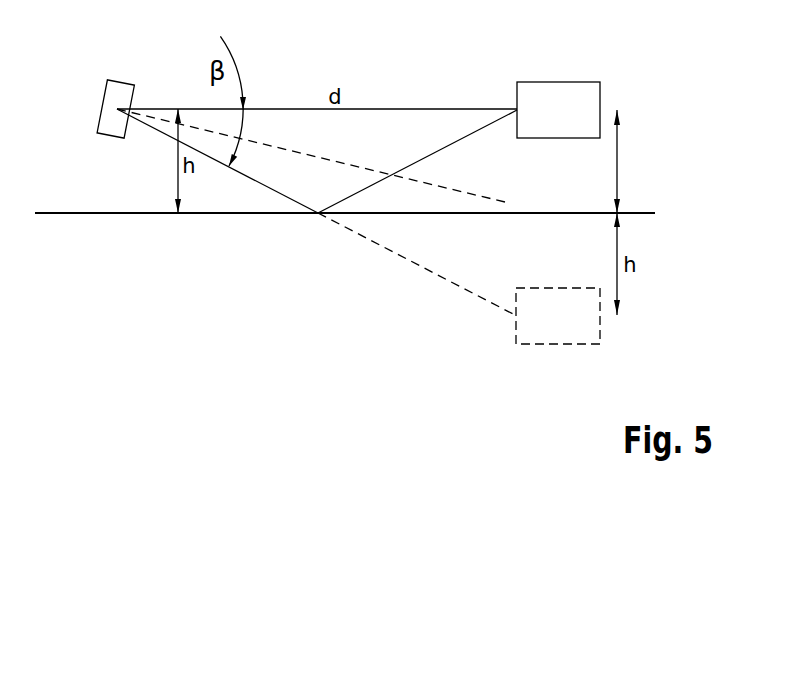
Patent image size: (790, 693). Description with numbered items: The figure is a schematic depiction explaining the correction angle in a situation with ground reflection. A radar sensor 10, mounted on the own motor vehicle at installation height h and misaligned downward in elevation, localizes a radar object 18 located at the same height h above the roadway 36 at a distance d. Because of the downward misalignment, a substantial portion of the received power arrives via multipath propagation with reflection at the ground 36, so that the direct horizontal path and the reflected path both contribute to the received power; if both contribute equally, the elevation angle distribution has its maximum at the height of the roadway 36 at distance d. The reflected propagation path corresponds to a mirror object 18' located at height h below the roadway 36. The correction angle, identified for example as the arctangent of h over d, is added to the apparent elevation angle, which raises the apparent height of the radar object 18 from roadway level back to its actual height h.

The radar sensor 10 is at (123, 80).
The radar object 18 is at (558, 79).
The mirror object 18' is at (558, 346).
The roadway 36 is at (72, 212).